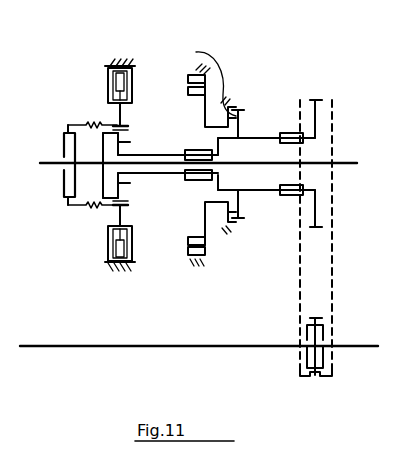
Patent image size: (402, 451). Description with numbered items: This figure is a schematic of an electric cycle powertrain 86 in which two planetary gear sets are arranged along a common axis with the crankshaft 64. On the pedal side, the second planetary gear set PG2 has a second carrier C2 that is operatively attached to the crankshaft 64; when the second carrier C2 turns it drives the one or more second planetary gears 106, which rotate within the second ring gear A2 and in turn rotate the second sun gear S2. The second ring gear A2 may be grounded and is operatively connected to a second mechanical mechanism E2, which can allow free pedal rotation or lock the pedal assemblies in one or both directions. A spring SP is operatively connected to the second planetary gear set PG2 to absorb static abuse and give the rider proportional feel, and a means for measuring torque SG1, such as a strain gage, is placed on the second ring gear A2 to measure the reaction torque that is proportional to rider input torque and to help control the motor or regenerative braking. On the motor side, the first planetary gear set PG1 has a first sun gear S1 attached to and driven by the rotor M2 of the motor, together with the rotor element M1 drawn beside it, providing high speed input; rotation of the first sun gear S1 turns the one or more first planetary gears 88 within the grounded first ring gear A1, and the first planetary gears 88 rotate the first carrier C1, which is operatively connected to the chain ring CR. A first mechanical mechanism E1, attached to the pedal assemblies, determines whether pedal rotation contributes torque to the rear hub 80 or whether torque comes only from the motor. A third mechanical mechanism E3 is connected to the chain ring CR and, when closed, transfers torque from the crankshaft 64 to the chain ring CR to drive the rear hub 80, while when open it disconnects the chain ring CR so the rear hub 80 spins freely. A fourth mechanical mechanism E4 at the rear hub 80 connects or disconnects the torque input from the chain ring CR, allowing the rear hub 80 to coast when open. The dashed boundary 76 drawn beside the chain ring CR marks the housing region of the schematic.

The crankshaft 64 is at (345, 163).
The rear hub 80 is at (352, 345).
The housing wall 76 is at (334, 118).
The electric cycle powertrain 86 is at (297, 58).
The first planetary gears 88 is at (196, 56).
The second planetary gears 106 is at (128, 132).
The chain ring CR is at (319, 222).
The first planetary gear set PG1 is at (212, 58).
The second planetary gear set PG2 is at (97, 106).
The means for measuring torque SG1 is at (132, 78).
The spring SP is at (92, 157).
The first mechanical mechanism E1 is at (194, 155).
The second mechanical mechanism E2 is at (53, 165).
The third mechanical mechanism E3 is at (270, 163).
The fourth mechanical mechanism E4 is at (300, 347).
The first sun gear S1 is at (206, 169).
The second sun gear S2 is at (168, 165).
The first ring gear A1 is at (233, 140).
The second ring gear A2 is at (138, 164).
The first carrier C1 is at (241, 151).
The second carrier C2 is at (99, 165).
The motor 1 M1 is at (186, 77).
The rotor M2 is at (186, 90).